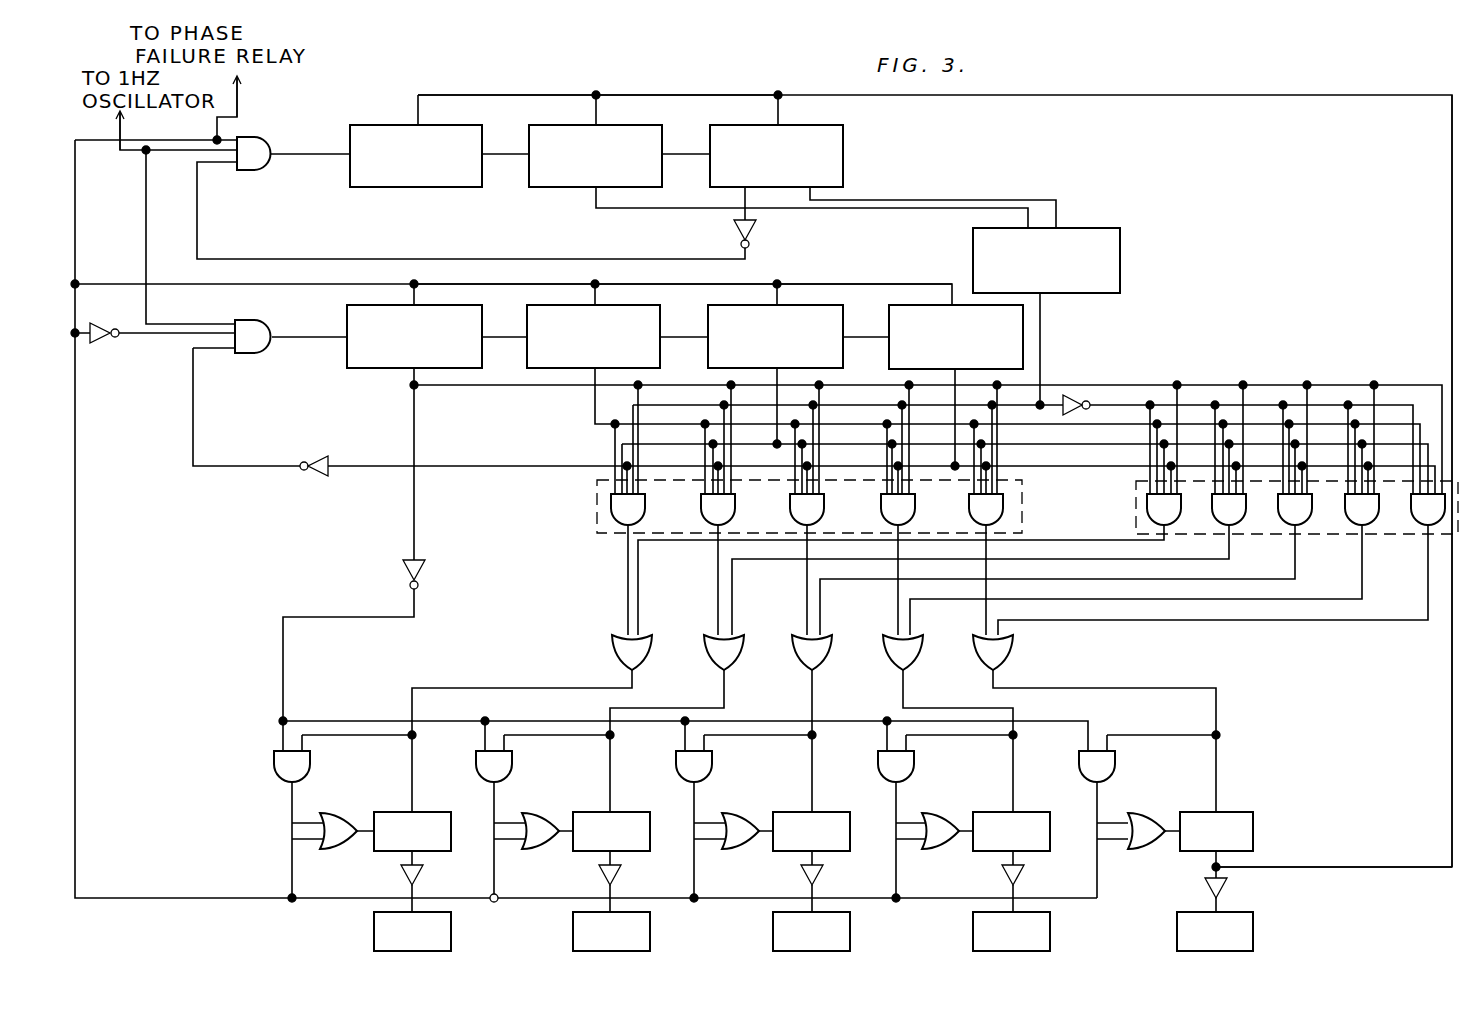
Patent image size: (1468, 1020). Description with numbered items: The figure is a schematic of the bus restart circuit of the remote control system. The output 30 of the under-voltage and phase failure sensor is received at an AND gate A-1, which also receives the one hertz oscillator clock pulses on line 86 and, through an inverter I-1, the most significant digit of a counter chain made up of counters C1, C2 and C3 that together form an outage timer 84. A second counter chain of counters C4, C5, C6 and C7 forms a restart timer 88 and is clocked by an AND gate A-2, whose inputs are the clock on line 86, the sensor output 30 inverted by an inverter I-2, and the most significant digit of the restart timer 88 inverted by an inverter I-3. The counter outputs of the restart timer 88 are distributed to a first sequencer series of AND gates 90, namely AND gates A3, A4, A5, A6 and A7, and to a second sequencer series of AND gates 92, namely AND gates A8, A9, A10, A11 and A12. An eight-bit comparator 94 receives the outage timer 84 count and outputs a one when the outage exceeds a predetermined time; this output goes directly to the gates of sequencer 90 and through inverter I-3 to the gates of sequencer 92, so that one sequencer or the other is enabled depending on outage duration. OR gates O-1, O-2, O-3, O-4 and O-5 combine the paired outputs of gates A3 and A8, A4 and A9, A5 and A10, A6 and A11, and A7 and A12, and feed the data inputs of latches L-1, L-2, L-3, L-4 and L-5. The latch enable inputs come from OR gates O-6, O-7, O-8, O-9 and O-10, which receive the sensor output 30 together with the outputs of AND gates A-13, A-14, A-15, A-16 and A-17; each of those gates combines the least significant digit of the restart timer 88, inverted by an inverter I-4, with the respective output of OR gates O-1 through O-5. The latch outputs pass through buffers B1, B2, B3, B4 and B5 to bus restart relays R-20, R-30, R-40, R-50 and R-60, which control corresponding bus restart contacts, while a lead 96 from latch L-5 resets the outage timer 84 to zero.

The output 30 is at (240, 89).
The line 86 is at (125, 117).
The outage timer 84 is at (657, 118).
The restart timer 88 is at (689, 304).
The sequencer series of AND gates 90 is at (597, 512).
The sequencer series of AND gates 92 is at (1136, 512).
The eight-bit comparator 94 is at (1120, 238).
The lead 96 is at (1452, 744).
The AND gate A-1 is at (262, 138).
The AND gate A-2 is at (255, 353).
The counter C1 is at (413, 187).
The counter C2 is at (575, 187).
The counter C3 is at (843, 155).
The counter C4 is at (450, 305).
The counter C5 is at (642, 305).
The counter C6 is at (825, 305).
The counter C7 is at (1023, 329).
The inverter I-1 is at (757, 227).
The inverter I-2 is at (100, 340).
The inverter I-3 is at (315, 476).
The inverter I-4 is at (425, 567).
The AND gate A3 is at (644, 508).
The AND gate A4 is at (735, 508).
The AND gate A5 is at (824, 508).
The AND gate A6 is at (915, 508).
The AND gate A7 is at (1003, 508).
The AND gate A8 is at (1179, 512).
The AND gate A9 is at (1244, 514).
The AND gate A10 is at (1310, 520).
The AND gate A11 is at (1375, 520).
The AND gate A12 is at (1436, 524).
The OR gate O-1 is at (643, 655).
The OR gate O-2 is at (733, 660).
The OR gate O-3 is at (823, 655).
The OR gate O-4 is at (912, 660).
The OR gate O-5 is at (1003, 655).
The AND gate A-13 is at (305, 765).
The AND gate A-14 is at (505, 765).
The AND gate A-15 is at (706, 765).
The AND gate A-16 is at (908, 765).
The AND gate A-17 is at (1109, 765).
The OR gate O-6 is at (343, 845).
The OR gate O-7 is at (545, 845).
The OR gate O-8 is at (745, 845).
The OR gate O-9 is at (945, 845).
The OR gate O-10 is at (1148, 845).
The latch L-1 is at (432, 812).
The latch L-2 is at (632, 812).
The latch L-3 is at (832, 812).
The latch L-4 is at (1032, 812).
The latch L-5 is at (1240, 813).
The buffer B1 is at (422, 873).
The buffer B2 is at (620, 873).
The buffer B3 is at (822, 873).
The buffer B4 is at (1022, 873).
The buffer B5 is at (1226, 883).
The bus restart relay R-20 is at (451, 930).
The bus restart relay R-30 is at (650, 930).
The bus restart relay R-40 is at (850, 930).
The bus restart relay R-50 is at (1050, 930).
The bus restart relay R-60 is at (1253, 932).